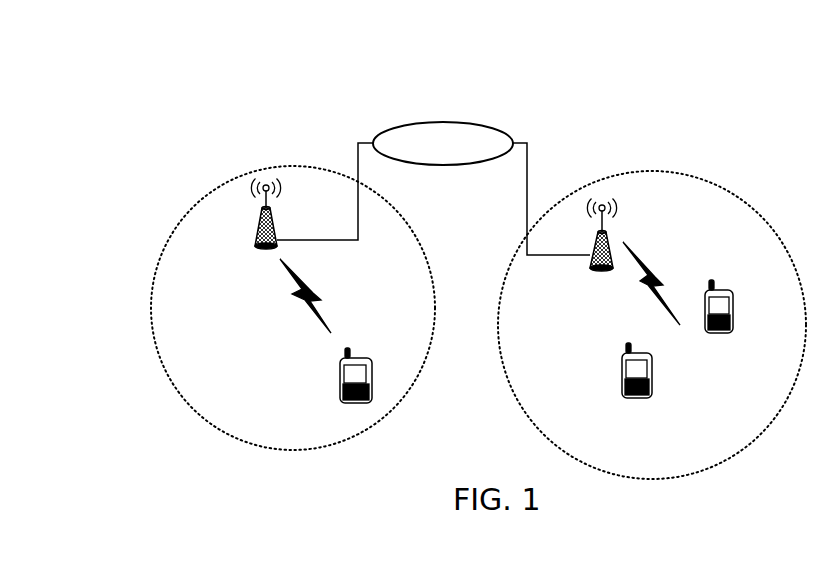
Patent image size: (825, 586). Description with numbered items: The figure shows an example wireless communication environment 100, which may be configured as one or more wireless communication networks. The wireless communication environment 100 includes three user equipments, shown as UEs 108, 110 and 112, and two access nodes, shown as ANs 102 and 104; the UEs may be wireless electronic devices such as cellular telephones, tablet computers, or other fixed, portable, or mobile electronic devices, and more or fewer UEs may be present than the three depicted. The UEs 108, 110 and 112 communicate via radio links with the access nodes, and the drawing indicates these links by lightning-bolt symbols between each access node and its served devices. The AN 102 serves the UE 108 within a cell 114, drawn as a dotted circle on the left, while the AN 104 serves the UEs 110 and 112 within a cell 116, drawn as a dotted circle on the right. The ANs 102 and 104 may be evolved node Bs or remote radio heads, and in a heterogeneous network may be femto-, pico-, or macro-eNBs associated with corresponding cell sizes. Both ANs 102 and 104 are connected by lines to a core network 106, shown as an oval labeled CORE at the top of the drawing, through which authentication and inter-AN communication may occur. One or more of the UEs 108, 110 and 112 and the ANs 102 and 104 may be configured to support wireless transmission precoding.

The wireless communication environment 100 is at (316, 69).
The access node 102 is at (253, 237).
The access node 104 is at (593, 243).
The core network 106 is at (403, 125).
The user equipment 108 is at (362, 362).
The user equipment 110 is at (645, 357).
The user equipment 112 is at (733, 295).
The cell 114 is at (294, 165).
The cell 116 is at (657, 170).